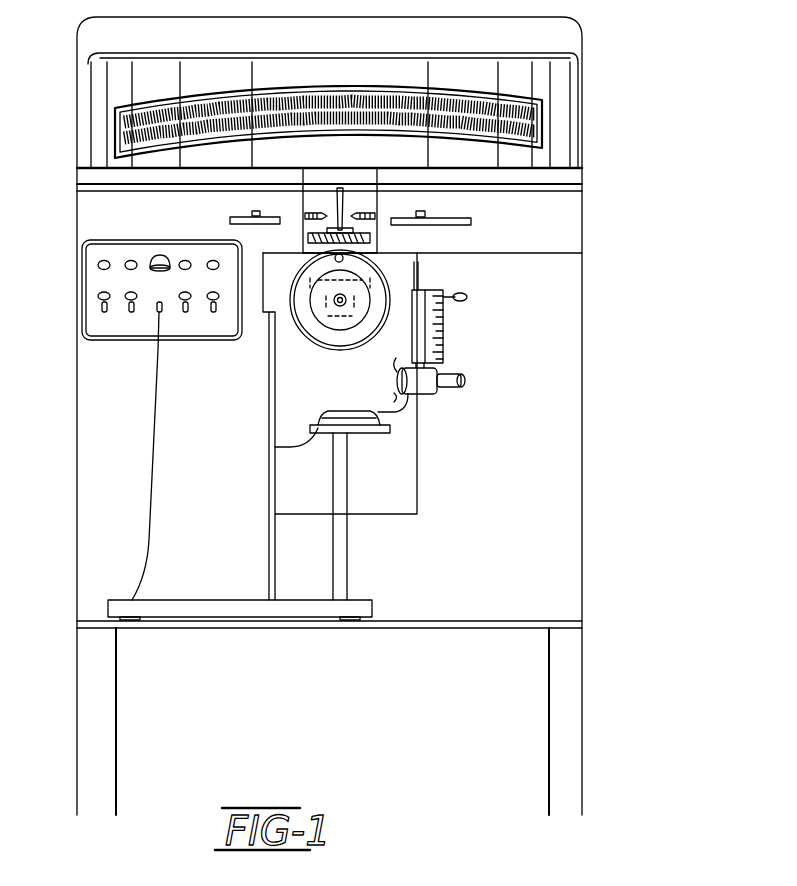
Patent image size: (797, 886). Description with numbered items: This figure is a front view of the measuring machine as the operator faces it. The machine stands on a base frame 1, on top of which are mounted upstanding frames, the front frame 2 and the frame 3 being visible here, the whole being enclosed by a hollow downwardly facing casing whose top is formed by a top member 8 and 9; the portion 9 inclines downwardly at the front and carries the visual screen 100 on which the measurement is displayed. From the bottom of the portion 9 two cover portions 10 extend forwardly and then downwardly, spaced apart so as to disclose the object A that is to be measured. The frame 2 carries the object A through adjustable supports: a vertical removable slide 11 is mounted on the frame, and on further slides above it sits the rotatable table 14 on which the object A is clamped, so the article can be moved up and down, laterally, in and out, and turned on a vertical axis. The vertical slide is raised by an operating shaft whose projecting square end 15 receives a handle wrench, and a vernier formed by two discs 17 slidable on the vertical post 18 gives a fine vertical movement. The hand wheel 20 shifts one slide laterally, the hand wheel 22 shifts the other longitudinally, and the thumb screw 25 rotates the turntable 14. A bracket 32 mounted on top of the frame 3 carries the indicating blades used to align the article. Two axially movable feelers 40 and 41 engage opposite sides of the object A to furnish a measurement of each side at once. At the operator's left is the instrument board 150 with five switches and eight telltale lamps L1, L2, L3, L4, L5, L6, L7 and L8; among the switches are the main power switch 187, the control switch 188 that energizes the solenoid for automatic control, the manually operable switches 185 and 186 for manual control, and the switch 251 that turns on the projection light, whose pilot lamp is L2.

The base frame 1 is at (437, 628).
The upstanding frame 2 is at (216, 488).
The upstanding frame 3 is at (512, 464).
The top member 8 is at (434, 32).
The top member 9 is at (330, 114).
The cover portions 10 is at (323, 211).
The vertical removable slide 11 is at (340, 426).
The rotatable table 14 is at (370, 237).
The projecting square end 15 is at (455, 360).
The discs 17 is at (388, 417).
The vertical post 18 is at (340, 462).
The hand wheel 20 is at (443, 327).
The hand wheel 22 is at (315, 337).
The thumb screw 25 is at (318, 246).
The bracket 32 is at (273, 223).
The feeler 40 is at (366, 207).
The feeler 41 is at (319, 212).
The visual screen 100 is at (412, 120).
The instrument board 150 is at (83, 288).
The manually operable switch 185 is at (188, 312).
The manually operable switch 186 is at (213, 312).
The main power switch 187 is at (100, 309).
The manually operable control switch 188 is at (157, 312).
The manually operable switch 251 is at (135, 312).
The object to be measured A is at (342, 192).
The telltale lamp L1 is at (99, 300).
The pilot lamp L2 is at (125, 299).
The telltale lamp L3 is at (184, 300).
The telltale lamp L4 is at (217, 300).
The telltale lamp L5 is at (98, 263).
The telltale lamp L6 is at (128, 262).
The telltale lamp L7 is at (183, 261).
The telltale lamp L8 is at (211, 261).